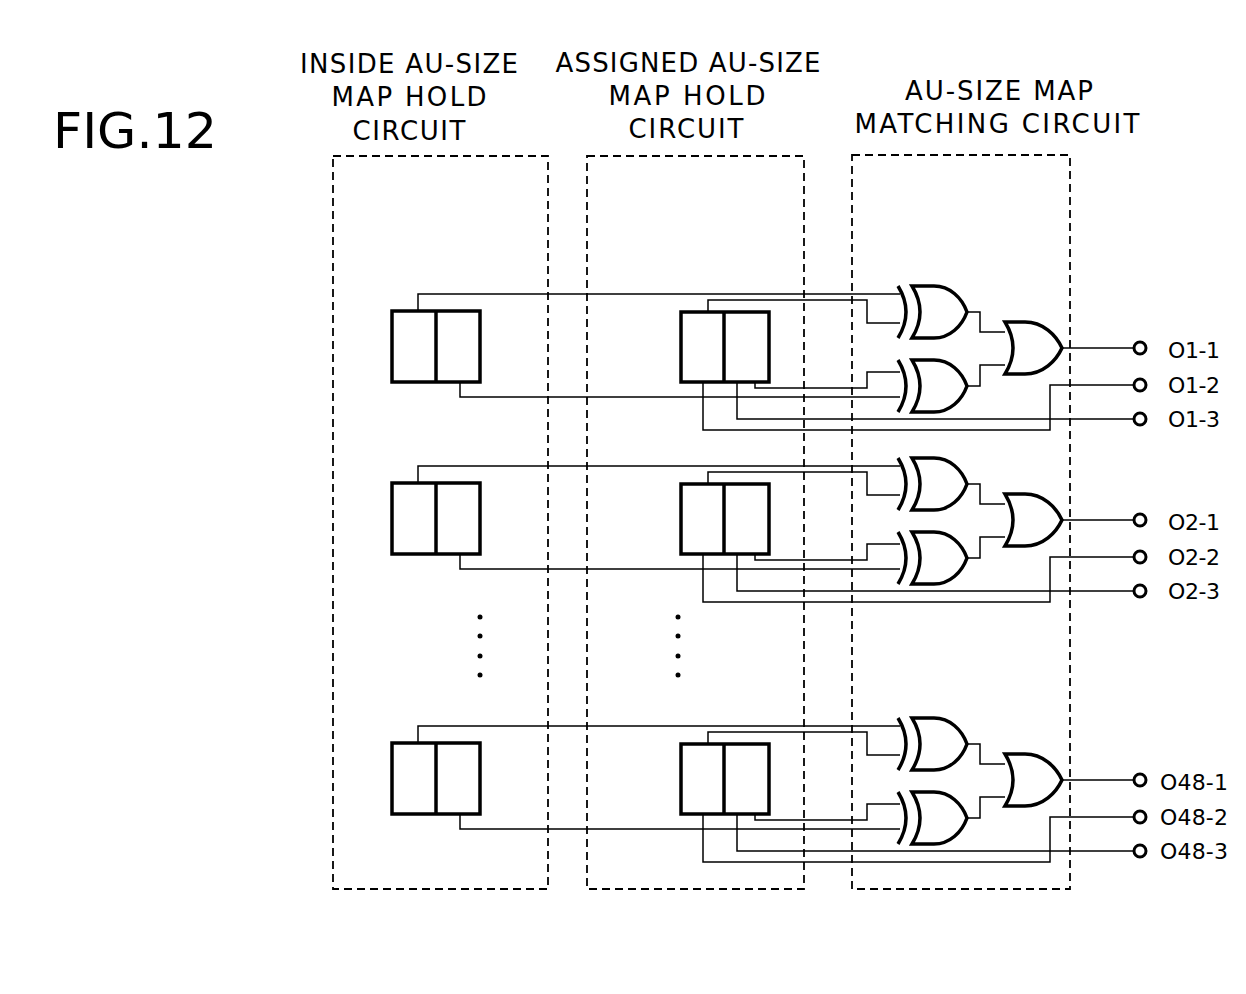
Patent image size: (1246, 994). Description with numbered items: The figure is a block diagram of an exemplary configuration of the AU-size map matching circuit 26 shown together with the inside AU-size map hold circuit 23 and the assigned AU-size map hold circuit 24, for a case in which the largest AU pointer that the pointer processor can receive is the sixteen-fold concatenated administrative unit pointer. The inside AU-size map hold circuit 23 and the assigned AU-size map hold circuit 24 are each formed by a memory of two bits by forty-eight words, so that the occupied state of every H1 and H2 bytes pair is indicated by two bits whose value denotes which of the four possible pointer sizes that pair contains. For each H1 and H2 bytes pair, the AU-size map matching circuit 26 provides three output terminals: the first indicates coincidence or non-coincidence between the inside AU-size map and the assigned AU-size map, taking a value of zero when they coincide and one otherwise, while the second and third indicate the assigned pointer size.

The inside AU-size map hold circuit 23 is at (333, 254).
The assigned AU-size map hold circuit 24 is at (587, 237).
The AU-size map matching circuit 26 is at (852, 245).